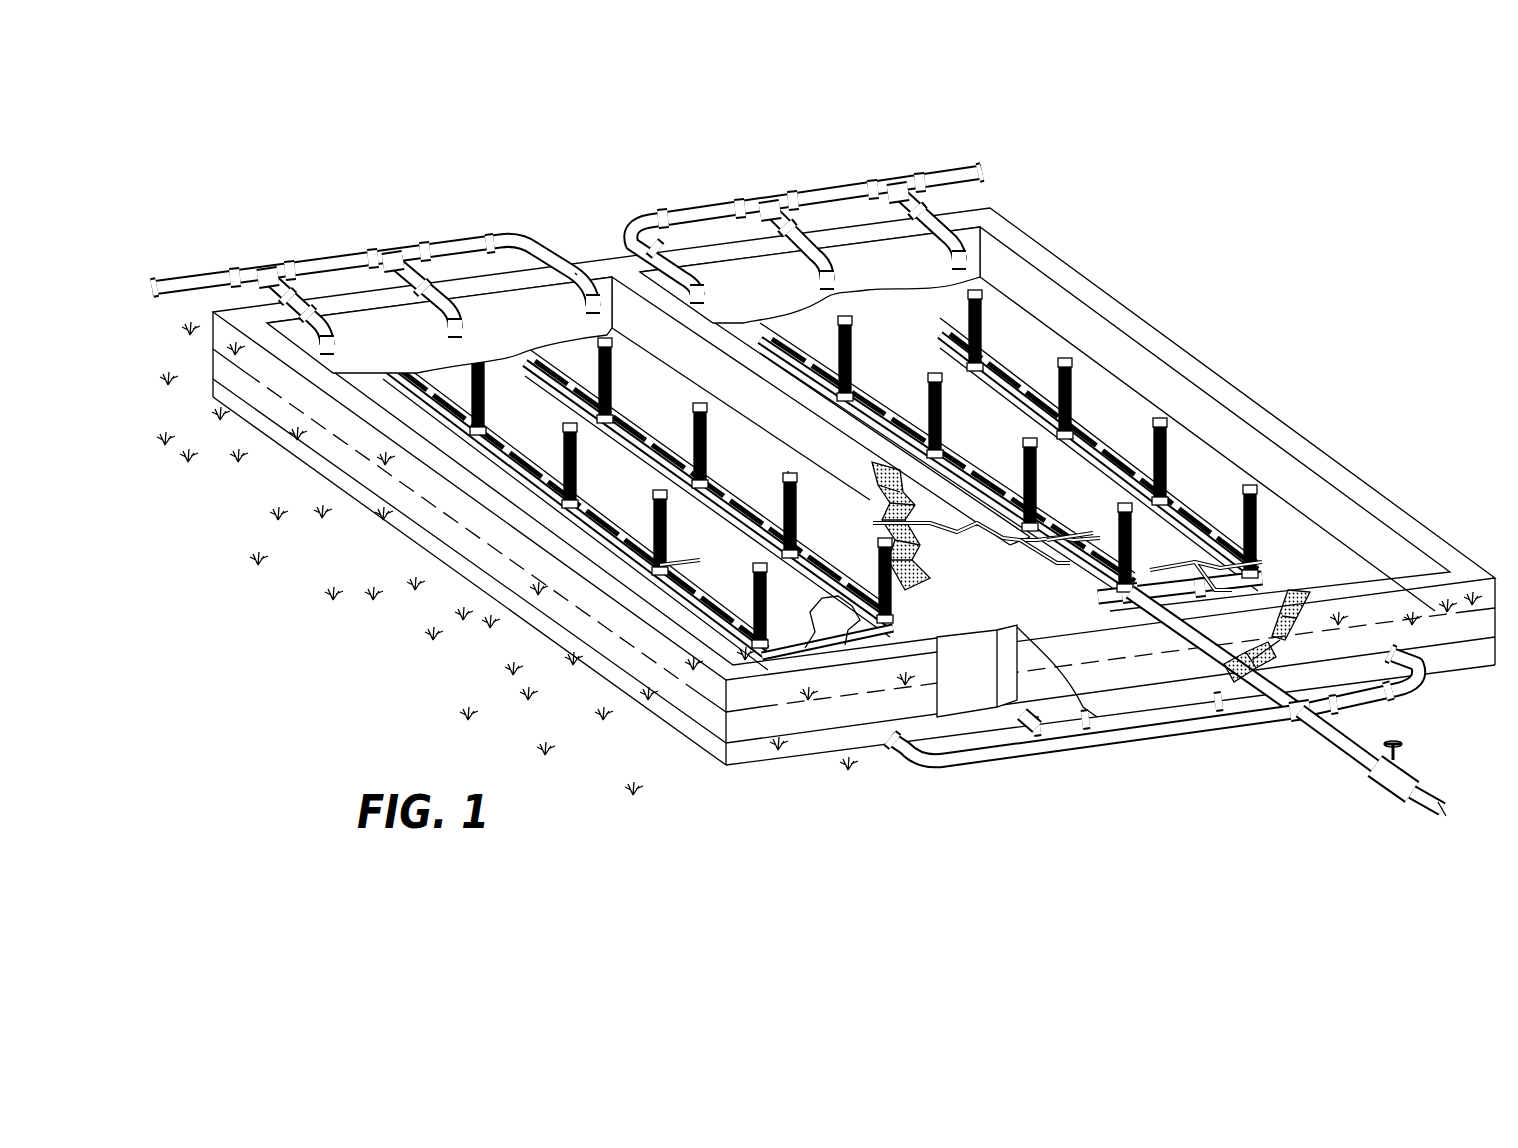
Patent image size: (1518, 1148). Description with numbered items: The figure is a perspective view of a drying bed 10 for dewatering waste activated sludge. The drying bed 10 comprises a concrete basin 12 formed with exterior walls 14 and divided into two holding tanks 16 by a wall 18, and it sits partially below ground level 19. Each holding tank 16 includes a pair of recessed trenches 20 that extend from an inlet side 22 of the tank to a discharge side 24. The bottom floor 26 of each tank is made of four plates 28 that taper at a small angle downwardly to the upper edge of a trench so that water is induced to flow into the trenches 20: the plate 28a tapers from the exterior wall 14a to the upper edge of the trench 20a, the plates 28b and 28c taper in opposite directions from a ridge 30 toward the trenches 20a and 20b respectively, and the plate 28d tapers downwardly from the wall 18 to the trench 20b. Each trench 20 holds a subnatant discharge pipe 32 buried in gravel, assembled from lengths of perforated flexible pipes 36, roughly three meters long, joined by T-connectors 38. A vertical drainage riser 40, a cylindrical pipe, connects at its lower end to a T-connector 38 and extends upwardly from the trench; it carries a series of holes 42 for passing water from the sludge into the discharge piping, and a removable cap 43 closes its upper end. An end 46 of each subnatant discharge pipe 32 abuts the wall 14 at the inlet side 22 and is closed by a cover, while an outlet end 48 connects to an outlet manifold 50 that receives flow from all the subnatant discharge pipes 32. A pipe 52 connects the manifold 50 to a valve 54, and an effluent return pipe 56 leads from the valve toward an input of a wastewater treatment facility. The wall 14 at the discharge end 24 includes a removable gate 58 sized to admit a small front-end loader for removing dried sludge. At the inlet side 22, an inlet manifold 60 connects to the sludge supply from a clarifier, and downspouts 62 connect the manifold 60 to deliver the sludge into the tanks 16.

The drying bed 10 is at (1144, 223).
The concrete basin 12 is at (1205, 373).
The exterior walls 14 is at (1337, 475).
The exterior wall 14a is at (447, 467).
The holding tanks 16 is at (622, 297).
The wall 18 is at (660, 338).
The ground level 19 is at (742, 712).
The recessed trenches 20 is at (1080, 583).
The trench 20a is at (690, 570).
The trench 20b is at (867, 627).
The inlet side 22 is at (505, 280).
The discharge side 24 is at (1105, 685).
The bottom floor 26 is at (960, 535).
The plates 28 is at (952, 509).
The plate 28a is at (385, 372).
The plate 28b is at (537, 426).
The plate 28c is at (512, 347).
The plate 28d is at (671, 401).
The ridge 30 is at (635, 475).
The subnatant discharge pipe 32 is at (1180, 613).
The flexible pipes 36 is at (1143, 607).
The T-connectors 38 is at (1117, 597).
The vertical drainage riser 40 is at (797, 487).
The holes 42 is at (787, 497).
The removable cap 43 is at (787, 470).
The end 46 is at (523, 347).
The outlet end 48 is at (1245, 660).
The outlet manifold 50 is at (1145, 740).
The pipe 52 is at (1337, 753).
The valve 54 is at (1377, 780).
The effluent return pipe 56 is at (1433, 790).
The gate 58 is at (982, 690).
The inlet manifold 60 is at (330, 262).
The downspouts 62 is at (925, 240).